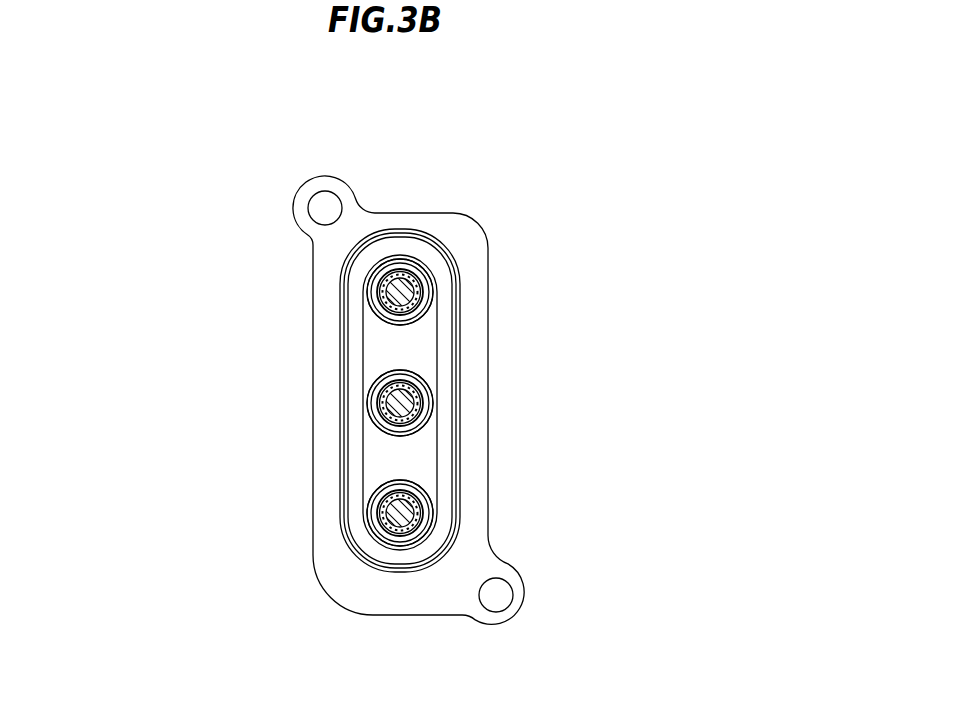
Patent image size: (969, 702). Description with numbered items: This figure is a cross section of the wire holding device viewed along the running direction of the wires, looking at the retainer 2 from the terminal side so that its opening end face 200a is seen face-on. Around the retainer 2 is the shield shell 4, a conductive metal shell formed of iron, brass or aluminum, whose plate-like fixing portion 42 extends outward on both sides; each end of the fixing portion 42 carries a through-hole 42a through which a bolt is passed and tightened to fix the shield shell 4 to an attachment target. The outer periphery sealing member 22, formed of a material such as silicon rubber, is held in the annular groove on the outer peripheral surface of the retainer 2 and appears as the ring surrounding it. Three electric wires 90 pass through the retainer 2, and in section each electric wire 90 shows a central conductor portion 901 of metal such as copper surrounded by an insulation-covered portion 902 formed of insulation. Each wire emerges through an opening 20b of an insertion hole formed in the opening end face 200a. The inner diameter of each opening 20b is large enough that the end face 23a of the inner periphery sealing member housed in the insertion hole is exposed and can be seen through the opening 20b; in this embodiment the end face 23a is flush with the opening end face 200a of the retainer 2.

The shield shell 4 is at (417, 165).
The retainer 2 is at (445, 447).
The outer periphery sealing member 22 is at (438, 240).
The opening 20b is at (365, 307).
The end face 23a is at (370, 294).
The opening end face 200a is at (413, 352).
The fixing portion 42 is at (322, 555).
The through-hole 42a is at (317, 212).
The electric wire 90 is at (810, 235).
The insulation-covered portion 902 is at (418, 288).
The conductor portion 901 is at (420, 295).